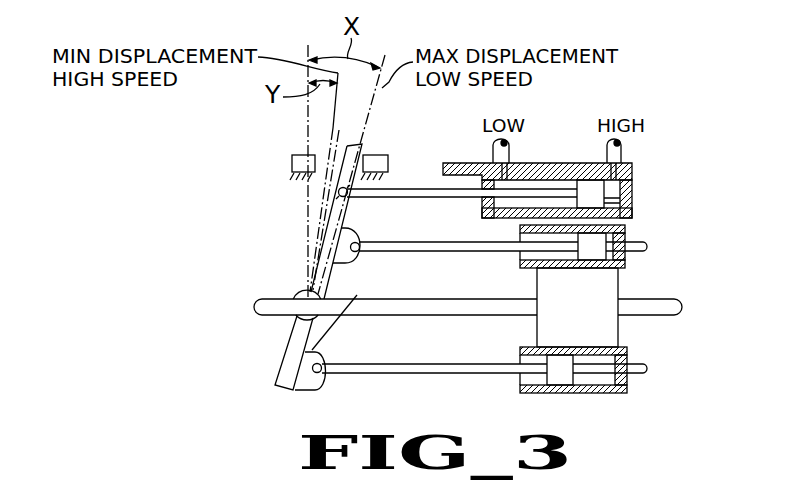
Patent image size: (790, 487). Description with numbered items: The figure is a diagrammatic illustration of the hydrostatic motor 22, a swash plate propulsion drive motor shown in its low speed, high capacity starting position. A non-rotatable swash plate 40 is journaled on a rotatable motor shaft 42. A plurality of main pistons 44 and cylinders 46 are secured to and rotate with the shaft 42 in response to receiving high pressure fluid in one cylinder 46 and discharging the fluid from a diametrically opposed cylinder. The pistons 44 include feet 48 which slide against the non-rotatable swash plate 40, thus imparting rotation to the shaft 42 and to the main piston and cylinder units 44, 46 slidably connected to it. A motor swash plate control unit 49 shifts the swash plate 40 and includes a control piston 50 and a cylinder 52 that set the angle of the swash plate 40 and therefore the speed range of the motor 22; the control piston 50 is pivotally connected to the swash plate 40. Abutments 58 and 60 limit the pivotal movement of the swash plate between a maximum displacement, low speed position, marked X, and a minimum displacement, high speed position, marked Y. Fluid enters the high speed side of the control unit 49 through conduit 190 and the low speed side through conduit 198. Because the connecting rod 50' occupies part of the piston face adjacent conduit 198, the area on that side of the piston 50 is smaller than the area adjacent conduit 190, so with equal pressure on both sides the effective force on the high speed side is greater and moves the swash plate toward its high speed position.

The hydrostatic motor 22 is at (262, 376).
The swash plate 40 is at (363, 143).
The motor shaft 42 is at (258, 308).
The main piston 44 is at (605, 264).
The cylinder 46 is at (565, 285).
The feet 48 is at (342, 264).
The motor swash plate control unit 49 is at (643, 179).
The control piston 50 is at (594, 202).
The connecting rod 50' is at (462, 214).
The cylinder 52 is at (633, 215).
The abutment 58 is at (388, 160).
The abutment 60 is at (292, 163).
The conduit 190 is at (622, 147).
The conduit 198 is at (507, 145).